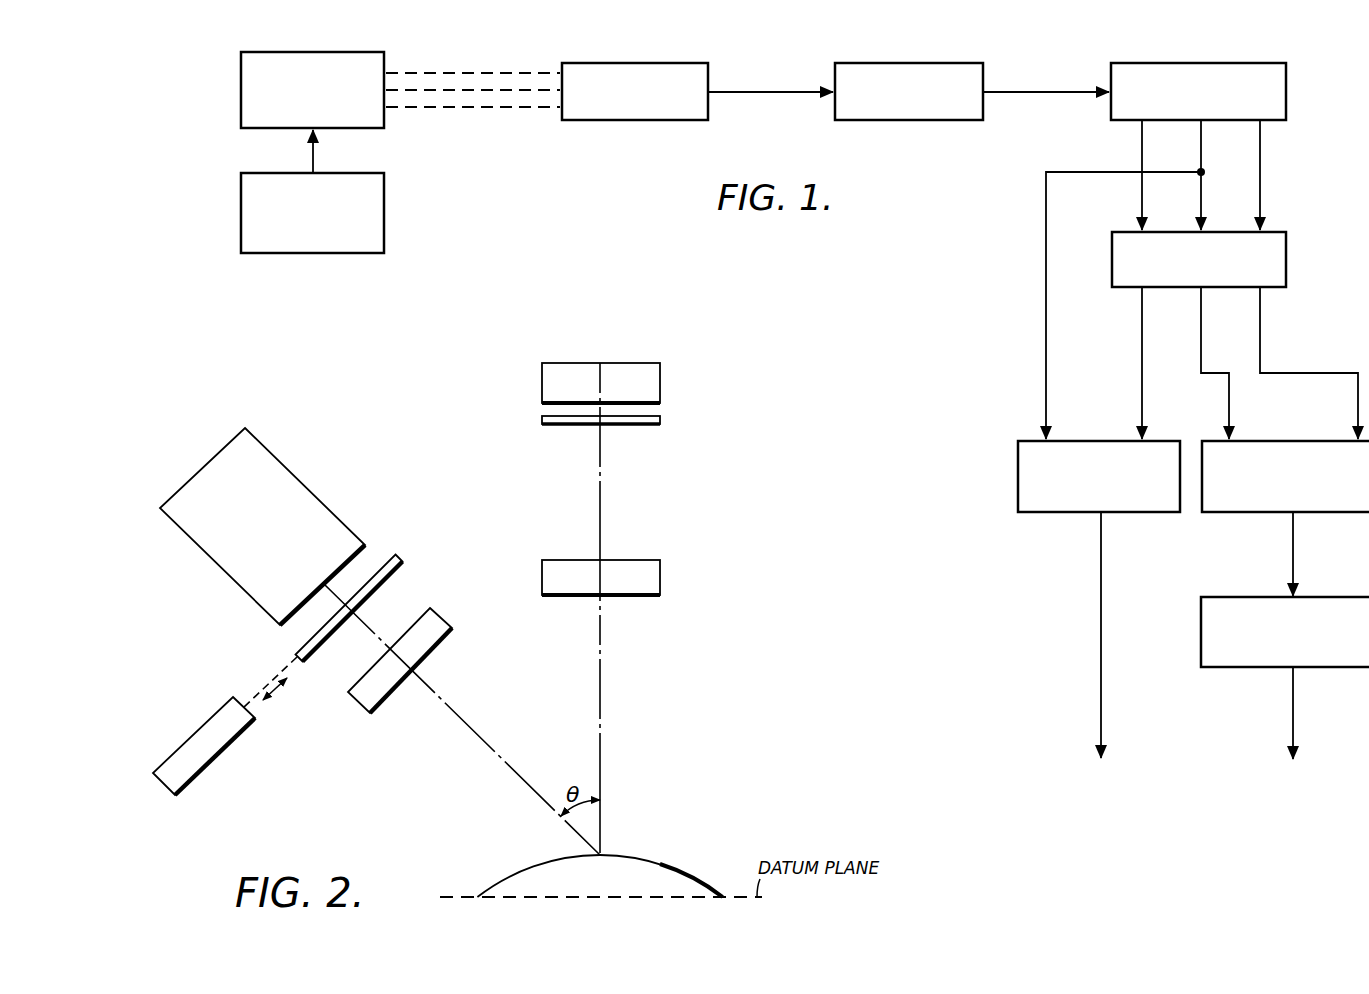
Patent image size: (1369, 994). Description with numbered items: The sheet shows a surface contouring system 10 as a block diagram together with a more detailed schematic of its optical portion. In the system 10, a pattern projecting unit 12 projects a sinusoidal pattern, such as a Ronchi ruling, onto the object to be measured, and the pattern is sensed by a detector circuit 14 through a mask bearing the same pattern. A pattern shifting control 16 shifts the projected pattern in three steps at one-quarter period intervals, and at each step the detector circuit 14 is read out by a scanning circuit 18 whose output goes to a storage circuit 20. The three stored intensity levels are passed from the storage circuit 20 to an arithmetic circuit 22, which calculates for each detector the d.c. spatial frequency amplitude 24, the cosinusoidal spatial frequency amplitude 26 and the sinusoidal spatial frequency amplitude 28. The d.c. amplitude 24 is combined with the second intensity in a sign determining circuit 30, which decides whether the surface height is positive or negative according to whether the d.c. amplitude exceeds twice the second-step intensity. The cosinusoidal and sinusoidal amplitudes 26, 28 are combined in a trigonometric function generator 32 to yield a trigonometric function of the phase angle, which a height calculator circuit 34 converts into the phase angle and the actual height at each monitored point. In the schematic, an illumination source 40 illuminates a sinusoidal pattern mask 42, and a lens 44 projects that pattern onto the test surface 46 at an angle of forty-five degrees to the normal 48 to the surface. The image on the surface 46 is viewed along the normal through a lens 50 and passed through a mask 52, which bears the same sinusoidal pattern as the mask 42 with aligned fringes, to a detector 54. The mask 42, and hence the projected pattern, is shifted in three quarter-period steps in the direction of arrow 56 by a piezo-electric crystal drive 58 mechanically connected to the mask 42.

In FIG. 1, the surface contouring system 10 is at (563, 182).
In FIG. 1, the pattern projecting unit 12 is at (240, 88).
In FIG. 2, the pattern projecting unit 12 is at (290, 786).
In FIG. 1, the detector circuit 14 is at (645, 63).
In FIG. 2, the detector circuit 14 is at (781, 524).
In FIG. 1, the pattern shifting control 16 is at (240, 207).
In FIG. 1, the scanning circuit 18 is at (932, 63).
In FIG. 1, the storage circuit 20 is at (1286, 83).
In FIG. 1, the arithmetic circuit 22 is at (1286, 258).
In FIG. 1, the d.c. spatial frequency amplitude 24 is at (1141, 322).
In FIG. 1, the cosinusoidal spatial frequency amplitude 26 is at (1200, 316).
In FIG. 1, the sinusoidal spatial frequency amplitude 28 is at (1261, 318).
In FIG. 1, the sign determining circuit 30 is at (1017, 478).
In FIG. 1, the trigonometric function generator 32 is at (1252, 512).
In FIG. 1, the height calculator circuit 34 is at (1252, 667).
In FIG. 2, the illumination source 40 is at (227, 572).
In FIG. 2, the sinusoidal pattern mask 42 is at (396, 553).
In FIG. 2, the projection lens 44 is at (397, 720).
In FIG. 2, the test surface 46 is at (665, 867).
In FIG. 2, the normal to the surface 48 is at (602, 708).
In FIG. 2, the viewing lens 50 is at (660, 580).
In FIG. 2, the mask 52 is at (660, 420).
In FIG. 2, the detector 54 is at (660, 383).
In FIG. 2, the arrow 56 is at (275, 690).
In FIG. 2, the crystal drive 58 is at (210, 823).